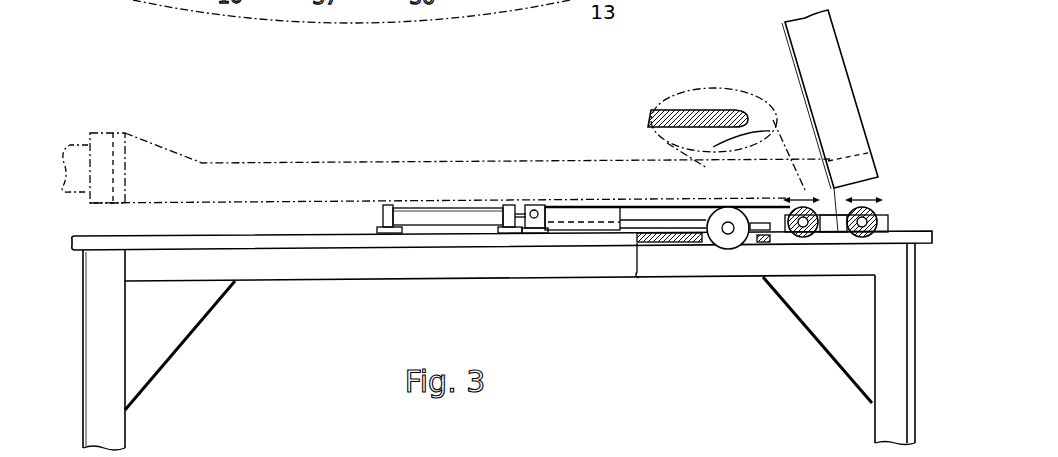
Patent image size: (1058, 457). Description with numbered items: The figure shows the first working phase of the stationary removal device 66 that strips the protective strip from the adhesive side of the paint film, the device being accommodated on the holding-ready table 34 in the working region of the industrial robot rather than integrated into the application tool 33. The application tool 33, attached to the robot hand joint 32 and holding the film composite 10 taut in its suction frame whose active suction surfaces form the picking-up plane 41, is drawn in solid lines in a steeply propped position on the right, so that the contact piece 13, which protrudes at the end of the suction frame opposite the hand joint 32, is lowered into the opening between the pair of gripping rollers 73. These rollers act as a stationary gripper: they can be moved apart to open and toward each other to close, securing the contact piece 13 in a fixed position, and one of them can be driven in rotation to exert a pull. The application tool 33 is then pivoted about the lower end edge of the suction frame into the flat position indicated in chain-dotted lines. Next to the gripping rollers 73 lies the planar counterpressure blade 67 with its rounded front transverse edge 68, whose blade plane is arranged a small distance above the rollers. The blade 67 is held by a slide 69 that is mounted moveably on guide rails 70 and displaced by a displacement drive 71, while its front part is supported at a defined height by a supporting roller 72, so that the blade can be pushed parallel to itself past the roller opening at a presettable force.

The two-layered film composite 10 is at (797, 63).
The contact piece 13 is at (845, 193).
The hand joint 32 is at (82, 143).
The application tool 33 is at (390, 160).
The holding-ready table 34 is at (328, 228).
The picking-up plane 41 is at (267, 207).
The removal device 66 is at (534, 240).
The counterpressure blade 67 is at (647, 205).
The transverse edge 68 is at (742, 118).
The slide 69 is at (566, 222).
The guide rails 70 is at (650, 243).
The displacement drive 71 is at (445, 218).
The supporting roller 72 is at (728, 242).
The pair of gripping rollers 73 is at (808, 237).